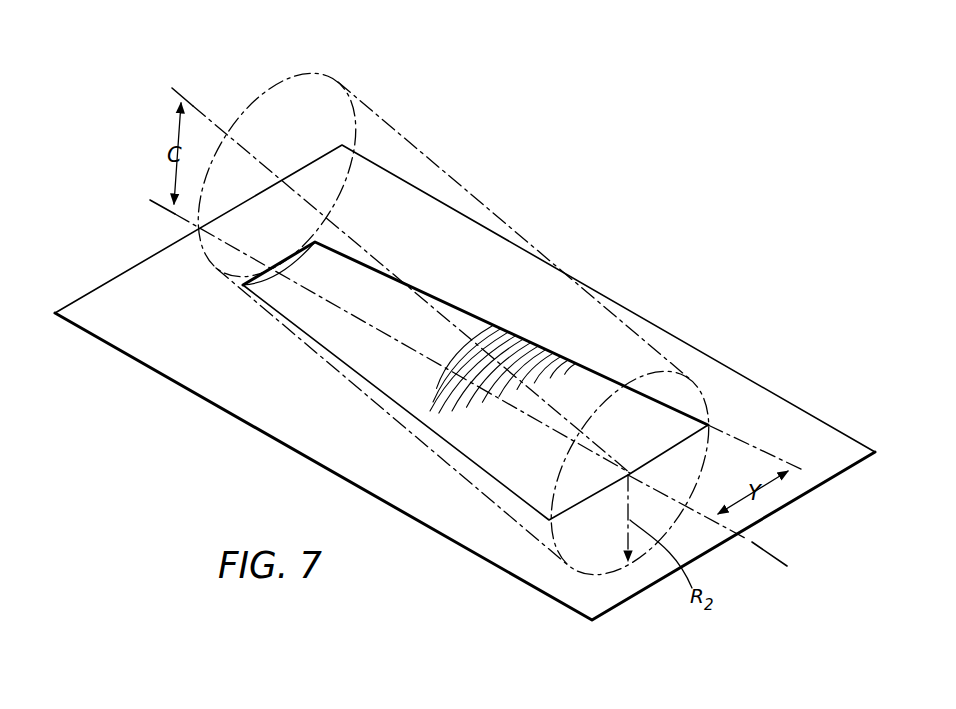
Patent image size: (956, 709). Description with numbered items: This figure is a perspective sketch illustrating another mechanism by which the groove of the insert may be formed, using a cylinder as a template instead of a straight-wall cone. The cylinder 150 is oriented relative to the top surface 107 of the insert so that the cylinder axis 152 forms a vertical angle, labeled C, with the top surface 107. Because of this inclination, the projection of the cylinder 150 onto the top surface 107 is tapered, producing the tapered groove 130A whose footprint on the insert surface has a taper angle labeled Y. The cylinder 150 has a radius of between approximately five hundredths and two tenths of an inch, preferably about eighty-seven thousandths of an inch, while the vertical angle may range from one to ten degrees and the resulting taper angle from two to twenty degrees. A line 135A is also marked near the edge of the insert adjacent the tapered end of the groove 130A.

The top surface 107 is at (745, 387).
The tapered groove 130A is at (372, 360).
The cylinder 150 is at (403, 132).
The cylinder axis 152 is at (205, 112).
The edge line 135A is at (772, 553).